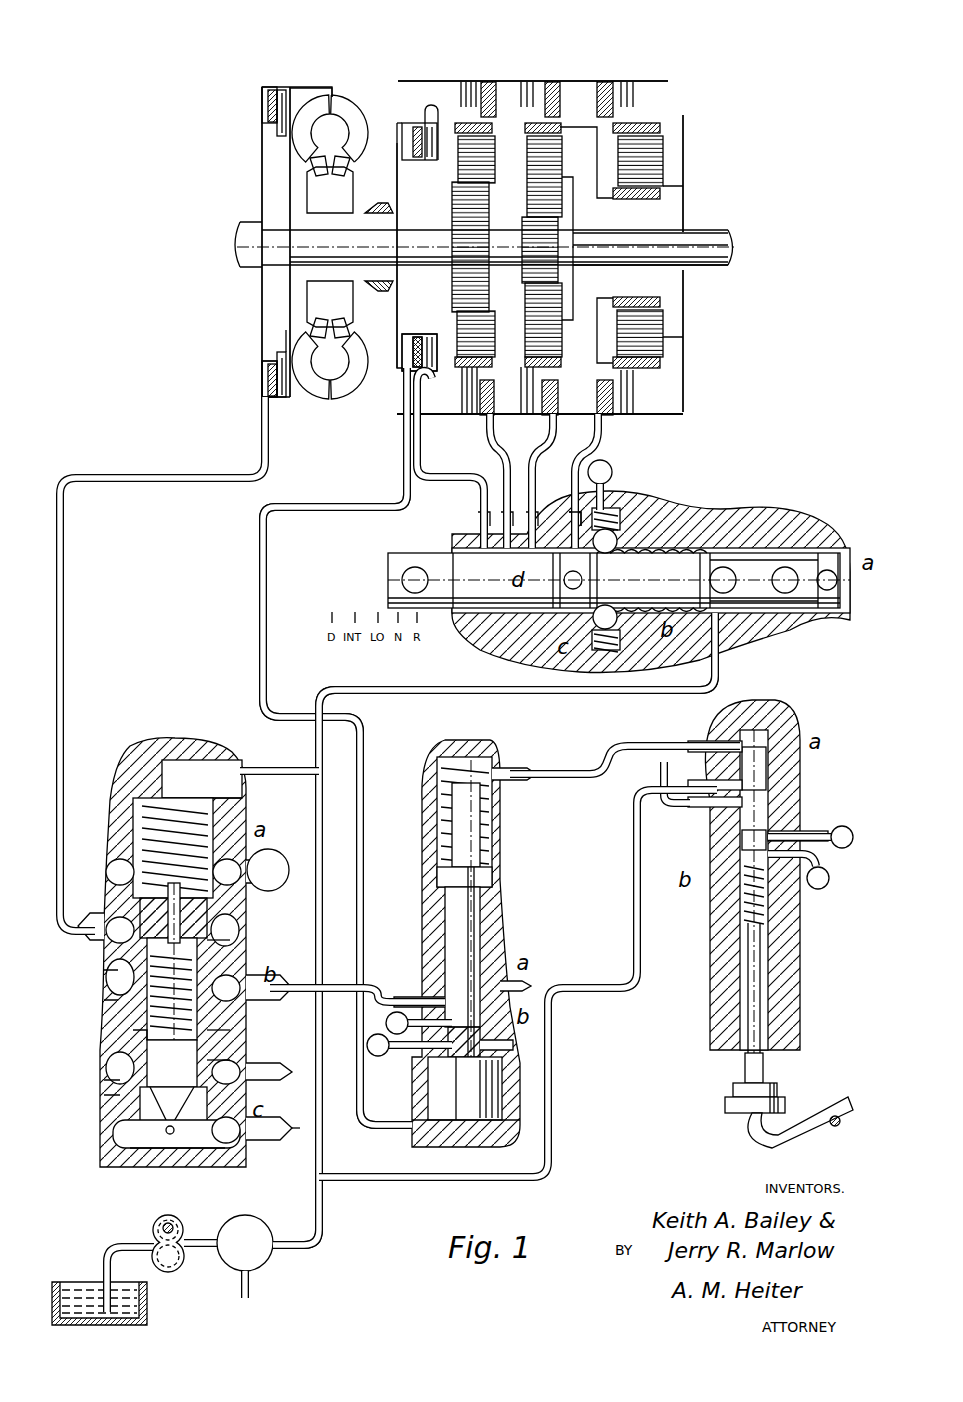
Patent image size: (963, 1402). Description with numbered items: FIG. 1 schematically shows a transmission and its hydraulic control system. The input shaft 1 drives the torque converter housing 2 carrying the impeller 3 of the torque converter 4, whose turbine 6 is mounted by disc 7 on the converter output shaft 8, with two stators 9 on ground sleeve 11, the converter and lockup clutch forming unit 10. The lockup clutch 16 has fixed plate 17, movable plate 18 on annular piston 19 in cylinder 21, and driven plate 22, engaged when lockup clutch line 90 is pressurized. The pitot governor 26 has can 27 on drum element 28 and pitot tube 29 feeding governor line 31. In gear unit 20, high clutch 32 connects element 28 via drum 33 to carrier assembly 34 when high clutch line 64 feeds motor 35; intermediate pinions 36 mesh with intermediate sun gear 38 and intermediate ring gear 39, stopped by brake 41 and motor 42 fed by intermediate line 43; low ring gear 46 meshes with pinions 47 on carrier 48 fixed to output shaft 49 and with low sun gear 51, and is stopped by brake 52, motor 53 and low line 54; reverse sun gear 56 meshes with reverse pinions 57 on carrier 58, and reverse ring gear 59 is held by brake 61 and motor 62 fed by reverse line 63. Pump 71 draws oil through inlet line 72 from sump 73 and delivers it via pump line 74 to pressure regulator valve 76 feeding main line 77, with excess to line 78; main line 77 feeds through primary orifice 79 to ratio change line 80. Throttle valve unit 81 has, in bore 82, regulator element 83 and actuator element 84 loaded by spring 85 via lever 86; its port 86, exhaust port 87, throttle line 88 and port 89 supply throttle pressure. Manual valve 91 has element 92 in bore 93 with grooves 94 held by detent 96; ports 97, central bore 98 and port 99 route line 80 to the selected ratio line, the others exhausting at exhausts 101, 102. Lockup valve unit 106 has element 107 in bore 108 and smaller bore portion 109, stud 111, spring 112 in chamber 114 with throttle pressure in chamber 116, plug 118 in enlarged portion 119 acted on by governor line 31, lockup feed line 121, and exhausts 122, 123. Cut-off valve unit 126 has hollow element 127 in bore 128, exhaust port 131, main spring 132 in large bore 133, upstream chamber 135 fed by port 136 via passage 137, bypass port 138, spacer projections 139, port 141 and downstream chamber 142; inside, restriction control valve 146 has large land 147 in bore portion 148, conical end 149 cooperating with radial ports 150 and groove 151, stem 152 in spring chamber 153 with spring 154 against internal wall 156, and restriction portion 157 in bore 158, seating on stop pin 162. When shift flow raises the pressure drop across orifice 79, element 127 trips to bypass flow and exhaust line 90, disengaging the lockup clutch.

The input shaft 1 is at (243, 233).
The rotary torque converter housing 2 is at (313, 87).
The bladed pump or impeller 3 is at (357, 130).
The torque converter 4 is at (344, 85).
The bladed turbine 6 is at (310, 112).
The disc 7 is at (290, 188).
The converter output shaft 8 is at (300, 243).
The stators 9 is at (341, 172).
The torque converter and lockup clutch unit 10 is at (252, 93).
The ground sleeve 11 is at (372, 213).
The direct drive or lockup clutch 16 is at (274, 141).
The fixed plate 17 is at (277, 92).
The axially movable plate 18 is at (283, 398).
The annular piston 19 is at (268, 108).
The three-speed and reverse gear unit 20 is at (684, 99).
The cylinder 21 is at (262, 392).
The driven plate 22 is at (288, 355).
The pitot tube governor 26 is at (403, 93).
The annular trough or can 27 is at (424, 100).
The driving disc and drum element 28 is at (396, 160).
The pitot tube 29 is at (424, 405).
The pitot governor line 31 is at (333, 505).
The high clutch 32 is at (430, 162).
The drum 33 is at (415, 160).
The carrier assembly 34 is at (528, 104).
The high clutch motor 35 is at (413, 335).
The intermediate planetary pinions 36 is at (483, 175).
The intermediate sun gear 38 is at (455, 242).
The intermediate ring gear 39 is at (468, 92).
The ratio brake 41 is at (489, 75).
The intermediate motor 42 is at (500, 118).
The intermediate clutch line 43 is at (500, 450).
The low ring gear 46 is at (550, 125).
The planetary pinions 47 is at (545, 200).
The carrier 48 is at (575, 215).
The output shaft 49 is at (728, 263).
The low sun gear 51 is at (560, 245).
The low ratio brake 52 is at (542, 418).
The motor 53 is at (558, 395).
The low clutch line 54 is at (572, 512).
The reverse sun gear 56 is at (660, 198).
The reverse pinions 57 is at (663, 158).
The carrier 58 is at (684, 186).
The reverse ring gear 59 is at (660, 128).
The ratio brake 61 is at (683, 414).
The motor 62 is at (597, 350).
The reverse clutch line 63 is at (590, 457).
The high clutch line 64 is at (403, 410).
The engine driven pump 71 is at (180, 1258).
The inlet line 72 is at (105, 1257).
The transmission sump 73 is at (147, 1305).
The pump line 74 is at (205, 1240).
The pressure regulator valve 76 is at (273, 1252).
The main line 77 is at (325, 1220).
The line 78 is at (252, 1285).
The primary orifice 79 is at (321, 1100).
The ratio change line 80 is at (722, 686).
The throttle valve unit 81 is at (808, 926).
The bore 82 is at (768, 834).
The throttle regulator valve element 83 is at (768, 780).
The actuator element 84 is at (760, 990).
The spring 85 is at (742, 918).
The lever 86 is at (692, 800).
The exhaust port 87 is at (852, 848).
The throttle line 88 is at (612, 745).
The port 89 is at (702, 745).
The lockup clutch line 90 is at (263, 450).
The manual valve 91 is at (477, 666).
The valve element 92 is at (392, 566).
The bore 93 is at (790, 545).
The annular grooves 94 is at (690, 548).
The detent 96 is at (622, 520).
The ports 97 is at (785, 593).
The central bore 98 is at (755, 548).
The port 99 is at (570, 590).
The exhaust 101 is at (613, 472).
The exhaust 102 is at (462, 541).
The lockup valve unit 106 is at (513, 914).
The lockup valve element 107 is at (476, 937).
The bore 108 is at (482, 900).
The smaller diameter bore portion 109 is at (482, 1045).
The stud 111 is at (455, 853).
The spring 112 is at (440, 800).
The spring chamber 114 is at (440, 768).
The chamber 116 is at (497, 800).
The lockup plug 118 is at (500, 1092).
The enlarged portion 119 is at (515, 1147).
The governor controlled lockup feed line 121 is at (378, 985).
The exhaust 122 is at (404, 997).
The exhaust 123 is at (381, 1058).
The lockup cut-off valve unit 126 is at (255, 934).
The hollow valve element 127 is at (232, 1003).
The bore 128 is at (215, 1032).
The exhaust port 131 is at (290, 862).
The main spring 132 is at (140, 770).
The large bore 133 is at (145, 825).
The upstream pressure chamber 135 is at (212, 1150).
The port 136 is at (270, 1148).
The passage 137 is at (330, 1137).
The port 138 is at (252, 1078).
The spacer projections 139 is at (180, 1150).
The port 141 is at (235, 765).
The downstream pressure and spring chamber 142 is at (225, 800).
The restriction control valve 146 is at (125, 982).
The large land 147 is at (130, 1035).
The large bore portion 148 is at (112, 1066).
The conical end portion 149 is at (170, 1080).
The radial ports 150 is at (120, 1090).
The groove 151 is at (225, 1070).
The stem portion 152 is at (150, 955).
The spring chamber 153 is at (205, 948).
The restriction regulating spring 154 is at (150, 1000).
The internal wall 156 is at (207, 905).
The restriction portion 157 is at (165, 900).
The bore 158 is at (148, 915).
The stop pin 162 is at (168, 1135).